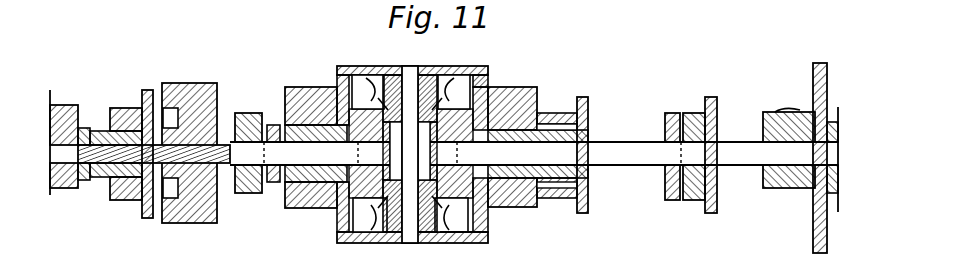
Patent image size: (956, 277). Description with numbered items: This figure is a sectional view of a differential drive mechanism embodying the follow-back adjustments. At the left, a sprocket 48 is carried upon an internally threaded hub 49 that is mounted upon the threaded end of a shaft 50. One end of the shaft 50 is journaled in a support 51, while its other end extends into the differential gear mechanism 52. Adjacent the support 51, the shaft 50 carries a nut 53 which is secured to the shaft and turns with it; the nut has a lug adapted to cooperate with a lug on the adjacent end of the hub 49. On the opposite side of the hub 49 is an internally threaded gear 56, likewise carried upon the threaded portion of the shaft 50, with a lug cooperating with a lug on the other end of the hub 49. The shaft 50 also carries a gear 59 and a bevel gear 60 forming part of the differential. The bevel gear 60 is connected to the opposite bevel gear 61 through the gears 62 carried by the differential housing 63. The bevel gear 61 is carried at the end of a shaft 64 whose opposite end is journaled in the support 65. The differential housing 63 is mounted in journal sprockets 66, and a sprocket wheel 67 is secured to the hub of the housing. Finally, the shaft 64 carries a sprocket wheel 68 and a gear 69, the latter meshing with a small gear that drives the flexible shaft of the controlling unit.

The sprocket 48 is at (118, 107).
The internally threaded hub 49 is at (112, 181).
The shaft 50 is at (236, 114).
The support 51 is at (61, 104).
The differential gear mechanism 52 is at (356, 66).
The nut 53 is at (89, 127).
The internally threaded gear 56 is at (184, 84).
The gear 59 is at (270, 124).
The bevel gear 60 is at (378, 72).
The bevel gear 61 is at (478, 72).
The gears 62 is at (438, 100).
The differential housing 63 is at (446, 243).
The shaft 64 is at (618, 142).
The support 65 is at (766, 120).
The journal sprockets 66 is at (305, 87).
The sprocket wheel 67 is at (588, 101).
The sprocket wheel 68 is at (688, 112).
The gear 69 is at (813, 81).